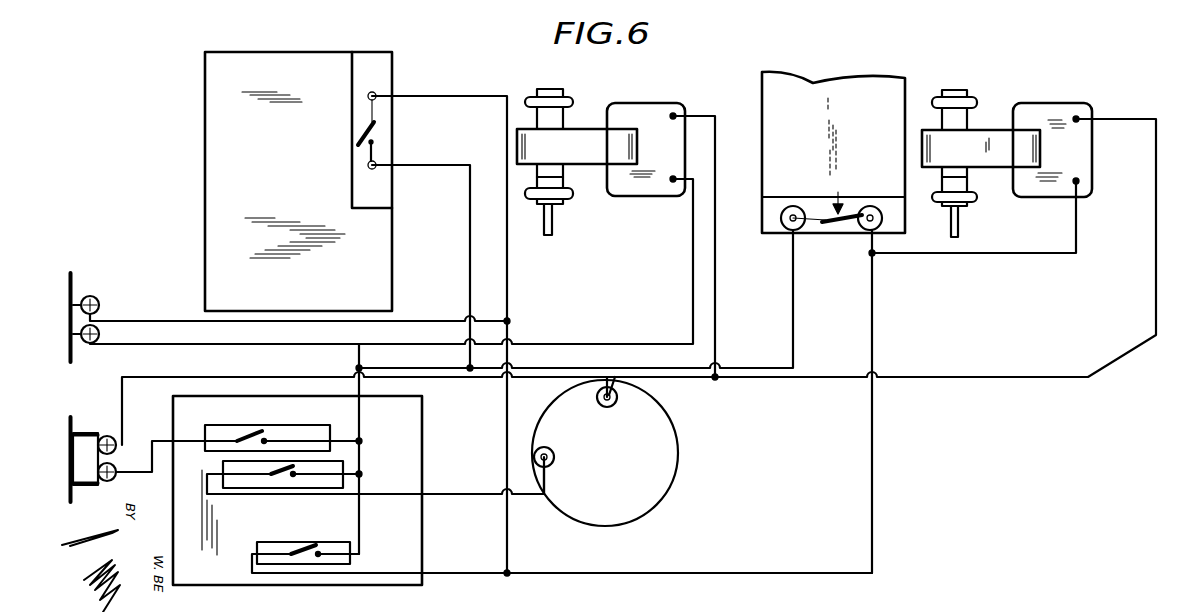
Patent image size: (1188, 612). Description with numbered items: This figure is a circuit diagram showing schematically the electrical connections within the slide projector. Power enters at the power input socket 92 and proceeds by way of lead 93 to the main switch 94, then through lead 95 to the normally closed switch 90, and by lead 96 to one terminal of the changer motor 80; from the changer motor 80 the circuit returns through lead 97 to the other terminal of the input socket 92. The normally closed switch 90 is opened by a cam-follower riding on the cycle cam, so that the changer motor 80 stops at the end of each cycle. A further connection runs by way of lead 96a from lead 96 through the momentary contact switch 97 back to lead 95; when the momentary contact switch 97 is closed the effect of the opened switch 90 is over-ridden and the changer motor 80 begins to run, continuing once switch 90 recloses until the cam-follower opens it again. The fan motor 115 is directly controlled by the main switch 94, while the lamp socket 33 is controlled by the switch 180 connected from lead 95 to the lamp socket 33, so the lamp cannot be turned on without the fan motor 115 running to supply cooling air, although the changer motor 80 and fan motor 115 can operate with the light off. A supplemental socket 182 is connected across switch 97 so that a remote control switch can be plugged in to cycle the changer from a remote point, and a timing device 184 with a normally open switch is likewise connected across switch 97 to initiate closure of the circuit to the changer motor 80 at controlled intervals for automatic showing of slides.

The timing device 184 is at (205, 162).
The supplemental socket 182 is at (78, 300).
The power input socket 92 is at (72, 488).
The lead 93 is at (165, 437).
The main switch 94 is at (290, 426).
The switch 180 is at (362, 476).
The lead / momentary contact switch 97 is at (990, 378).
The lead 95 is at (683, 366).
The lamp socket 33 is at (626, 485).
The fan motor 115 is at (628, 85).
The normally closed switch 90 is at (845, 232).
The lead 96 is at (983, 255).
The lead 96a is at (873, 490).
The changer motor 80 is at (1070, 88).